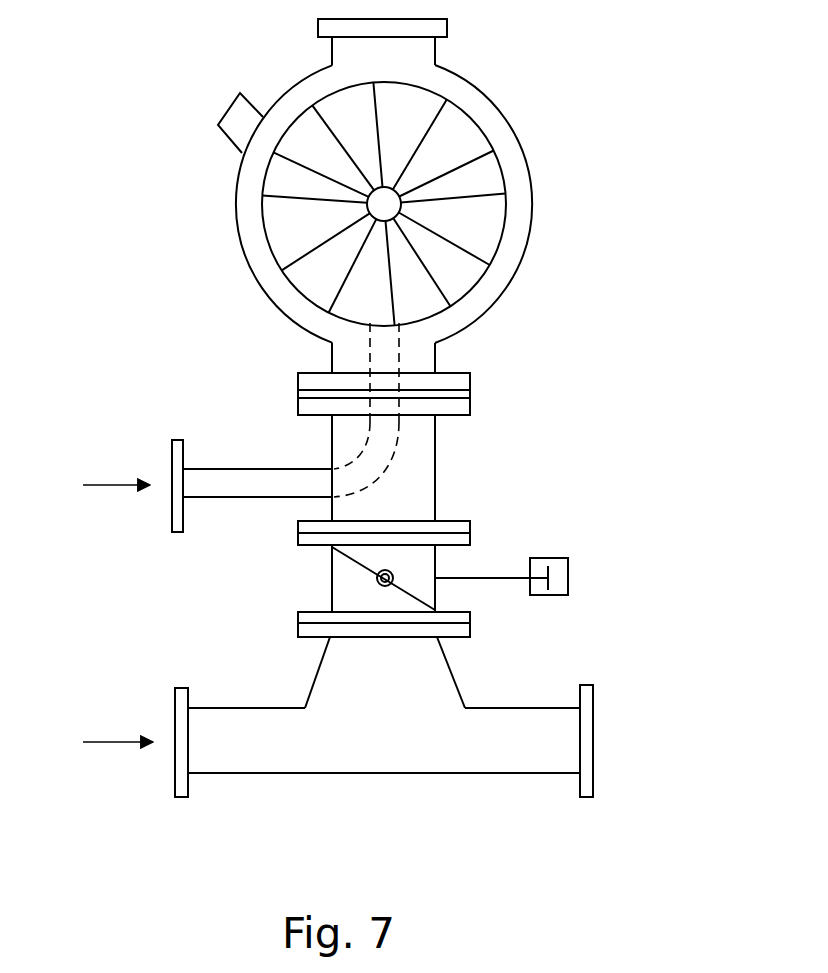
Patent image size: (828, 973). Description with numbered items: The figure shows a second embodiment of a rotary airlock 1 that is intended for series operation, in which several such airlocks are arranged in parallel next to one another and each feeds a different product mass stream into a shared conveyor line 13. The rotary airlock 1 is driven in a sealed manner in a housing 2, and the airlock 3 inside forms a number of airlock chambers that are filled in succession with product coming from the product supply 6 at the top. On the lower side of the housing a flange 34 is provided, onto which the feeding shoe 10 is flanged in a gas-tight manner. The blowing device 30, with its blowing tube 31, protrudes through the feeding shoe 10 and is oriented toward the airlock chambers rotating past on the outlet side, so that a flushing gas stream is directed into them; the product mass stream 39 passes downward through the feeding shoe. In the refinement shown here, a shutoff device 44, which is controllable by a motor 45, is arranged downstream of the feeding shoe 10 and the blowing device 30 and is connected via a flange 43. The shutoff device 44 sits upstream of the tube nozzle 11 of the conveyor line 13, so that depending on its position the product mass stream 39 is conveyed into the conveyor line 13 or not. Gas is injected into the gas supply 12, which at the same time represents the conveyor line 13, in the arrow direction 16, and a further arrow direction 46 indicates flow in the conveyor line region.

The rotary airlock 1 is at (569, 146).
The housing 2 is at (507, 283).
The airlock 3 is at (457, 140).
The product supply 6 is at (413, 53).
The feeding shoe 10 is at (418, 438).
The tube nozzle 11 is at (432, 677).
The gas supply 12 is at (239, 762).
The conveyor line 13 is at (527, 762).
The arrow direction 16 is at (108, 485).
The blowing device 30 is at (418, 349).
The blowing tube 31 is at (247, 482).
The flange 34 is at (470, 400).
The product mass stream 39 is at (384, 512).
The flange 43 is at (470, 528).
The shutoff device 44 is at (350, 587).
The motor 45 is at (568, 575).
The arrow direction 46 is at (107, 742).